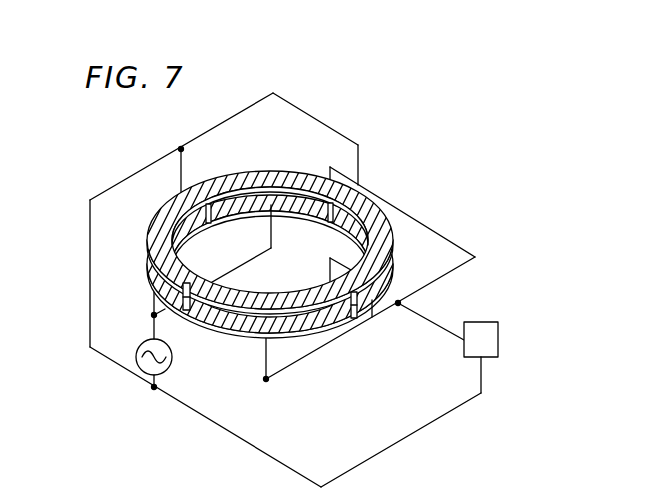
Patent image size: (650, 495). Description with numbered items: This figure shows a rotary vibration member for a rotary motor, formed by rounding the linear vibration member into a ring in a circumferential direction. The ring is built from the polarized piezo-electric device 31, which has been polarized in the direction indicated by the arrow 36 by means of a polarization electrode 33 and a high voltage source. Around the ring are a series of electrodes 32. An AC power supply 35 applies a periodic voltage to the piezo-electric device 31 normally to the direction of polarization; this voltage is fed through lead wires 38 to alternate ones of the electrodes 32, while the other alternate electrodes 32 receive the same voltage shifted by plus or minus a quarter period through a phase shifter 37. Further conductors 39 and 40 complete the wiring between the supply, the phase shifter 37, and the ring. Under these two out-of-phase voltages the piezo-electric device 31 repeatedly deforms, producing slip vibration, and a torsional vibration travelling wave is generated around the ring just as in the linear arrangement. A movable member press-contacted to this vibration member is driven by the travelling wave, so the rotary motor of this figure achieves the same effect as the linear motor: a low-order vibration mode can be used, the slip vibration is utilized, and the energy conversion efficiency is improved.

The piezo-electric device 31 is at (351, 312).
The electrodes 32 is at (232, 175).
The polarization electrode 33 is at (303, 214).
The AC power supply 35 is at (139, 344).
The arrow 36 is at (157, 216).
The phase shifter 37 is at (448, 348).
The lead wires 38 is at (323, 118).
The conductor 39 is at (427, 220).
The lead wire 40 is at (313, 353).